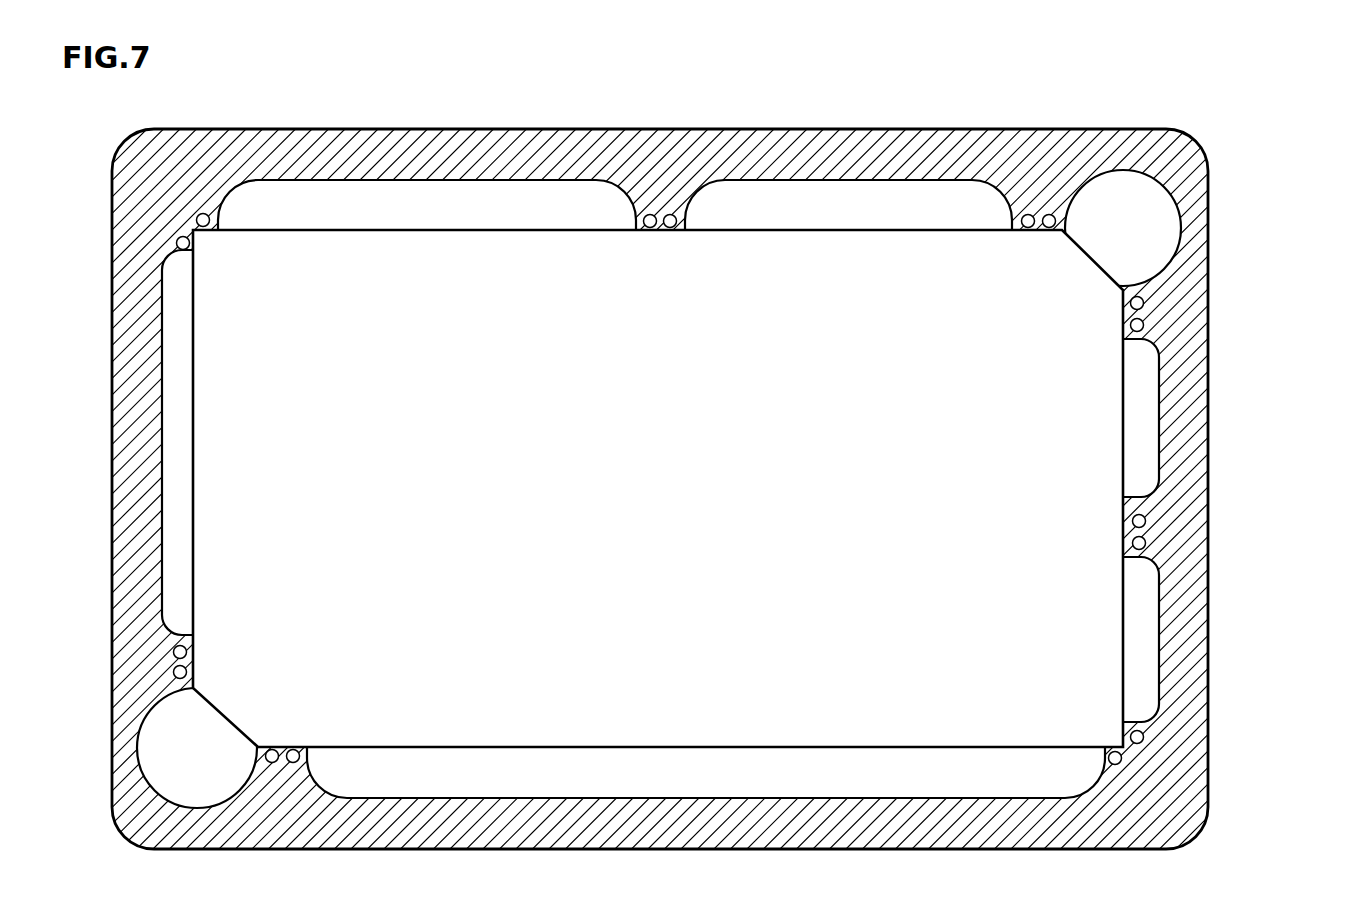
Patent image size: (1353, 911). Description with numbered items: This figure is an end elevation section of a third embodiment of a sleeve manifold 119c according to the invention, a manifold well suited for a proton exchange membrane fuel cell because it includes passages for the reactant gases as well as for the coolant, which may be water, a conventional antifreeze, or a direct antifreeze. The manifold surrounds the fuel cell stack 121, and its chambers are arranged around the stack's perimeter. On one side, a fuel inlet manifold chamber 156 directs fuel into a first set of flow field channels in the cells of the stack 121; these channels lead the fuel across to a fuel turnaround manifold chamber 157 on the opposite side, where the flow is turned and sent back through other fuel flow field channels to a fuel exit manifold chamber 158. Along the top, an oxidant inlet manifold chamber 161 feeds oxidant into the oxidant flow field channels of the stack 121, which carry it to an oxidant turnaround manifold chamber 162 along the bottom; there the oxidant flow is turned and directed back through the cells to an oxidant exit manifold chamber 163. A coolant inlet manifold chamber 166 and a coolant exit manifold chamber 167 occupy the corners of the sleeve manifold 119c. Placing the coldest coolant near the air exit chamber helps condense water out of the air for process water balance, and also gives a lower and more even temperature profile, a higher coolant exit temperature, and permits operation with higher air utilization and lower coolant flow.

The sleeve manifold 119c is at (1232, 170).
The fuel cell stack 121 is at (699, 496).
The oxidant inlet manifold chamber 161 is at (430, 217).
The oxidant exit manifold chamber 163 is at (877, 217).
The oxidant turnaround manifold chamber 162 is at (699, 785).
The fuel turnaround manifold chamber 157 is at (178, 491).
The fuel exit manifold chamber 158 is at (1145, 381).
The fuel inlet manifold chamber 156 is at (1142, 645).
The coolant inlet manifold chamber 166 is at (1147, 241).
The coolant exit manifold chamber 167 is at (218, 764).